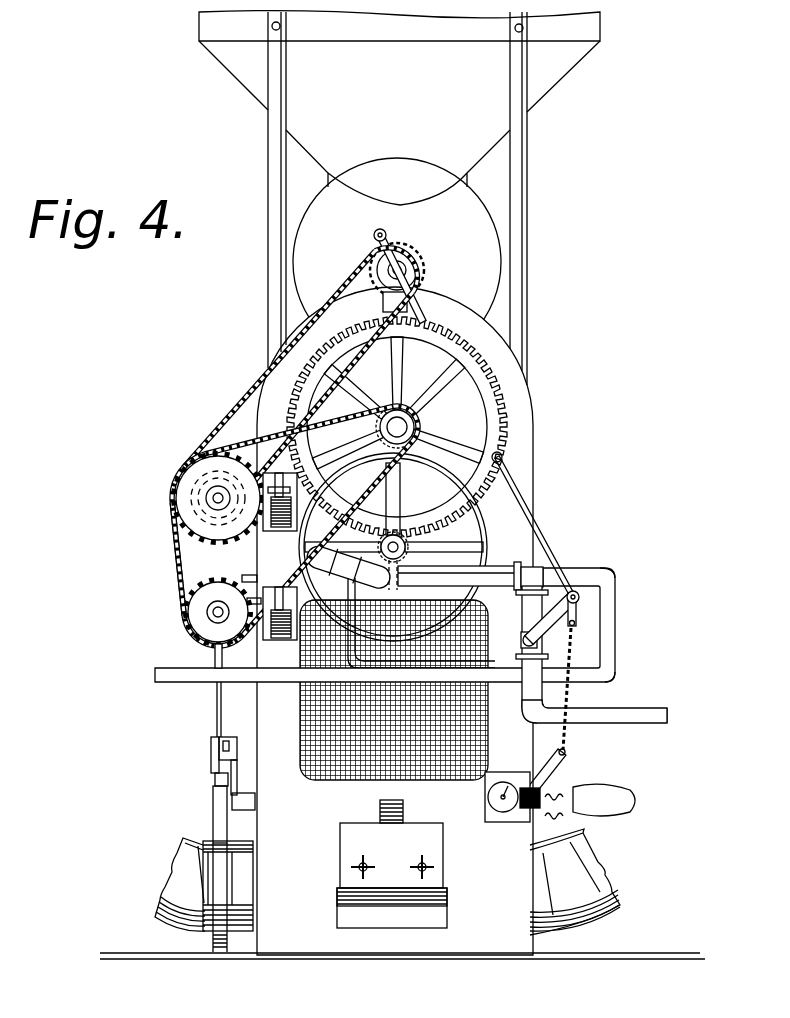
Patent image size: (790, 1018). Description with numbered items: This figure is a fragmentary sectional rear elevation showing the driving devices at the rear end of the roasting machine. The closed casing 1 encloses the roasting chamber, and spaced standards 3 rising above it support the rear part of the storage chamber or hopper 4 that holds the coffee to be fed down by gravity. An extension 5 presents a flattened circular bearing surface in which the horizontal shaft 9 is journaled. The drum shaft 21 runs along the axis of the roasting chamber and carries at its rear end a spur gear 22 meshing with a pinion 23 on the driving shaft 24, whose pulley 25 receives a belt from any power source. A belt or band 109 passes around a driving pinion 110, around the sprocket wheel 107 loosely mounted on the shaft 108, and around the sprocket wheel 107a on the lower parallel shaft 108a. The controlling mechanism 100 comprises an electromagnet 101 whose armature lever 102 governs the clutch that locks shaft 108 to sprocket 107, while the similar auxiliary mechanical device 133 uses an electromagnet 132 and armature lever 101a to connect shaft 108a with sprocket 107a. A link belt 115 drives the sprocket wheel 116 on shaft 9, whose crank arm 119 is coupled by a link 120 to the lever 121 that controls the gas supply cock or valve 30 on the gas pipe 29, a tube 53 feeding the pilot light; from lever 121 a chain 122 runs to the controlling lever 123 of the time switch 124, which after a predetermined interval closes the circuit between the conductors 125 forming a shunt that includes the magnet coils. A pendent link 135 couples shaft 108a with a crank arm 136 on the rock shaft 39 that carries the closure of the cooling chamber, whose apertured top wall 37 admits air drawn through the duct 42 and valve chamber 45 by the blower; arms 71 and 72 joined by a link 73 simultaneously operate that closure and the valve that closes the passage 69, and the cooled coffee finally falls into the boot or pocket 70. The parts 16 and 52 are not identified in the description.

The casing 1 is at (535, 432).
The standards 3 is at (268, 146).
The storage chamber or hopper 4 is at (398, 143).
The extension 5 is at (397, 262).
The shaft 9 is at (402, 262).
The left discharge bell 16 is at (183, 864).
The shaft 21 is at (428, 388).
The spur gear 22 is at (500, 393).
The pinion 23 is at (432, 545).
The driving shaft 24 is at (398, 538).
The pulley 25 is at (500, 548).
The pipe 29 is at (495, 566).
The gas supply cock or valve 30 is at (540, 645).
The apertured cover or top wall 37 is at (415, 773).
The rock shaft 39 is at (250, 810).
The duct 42 is at (248, 872).
The valve chamber 45 is at (213, 828).
The water pipe 52 is at (600, 575).
The tube 53 is at (342, 672).
The duct or passage 69 is at (545, 882).
The boot or pocket 70 is at (320, 940).
The arm 71 is at (215, 785).
The arm 72 is at (238, 757).
The link 73 is at (211, 756).
The controlling mechanism 100 is at (198, 509).
The electromagnet 101 is at (176, 545).
The armature lever 101a is at (272, 528).
The armature lever 102 is at (226, 455).
The sprocket wheel 107 is at (182, 486).
The sprocket wheel 107a is at (206, 642).
The shaft 108 is at (216, 500).
The shaft 108a is at (216, 612).
The belt or band 109 is at (176, 555).
The driving pinion 110 is at (295, 526).
The link belt 115 is at (292, 358).
The sprocket wheel 116 is at (383, 276).
The crank arm 119 is at (376, 234).
The link 120 is at (517, 485).
The lever 121 is at (582, 615).
The chain 122 is at (600, 716).
The controlling lever 123 is at (550, 772).
The time switch or governor 124 is at (500, 826).
The conductors 125 is at (560, 798).
The electromagnet 132 is at (292, 631).
The mechanical device 133 is at (206, 628).
The pendent link 135 is at (218, 714).
The crank arm 136 is at (238, 790).